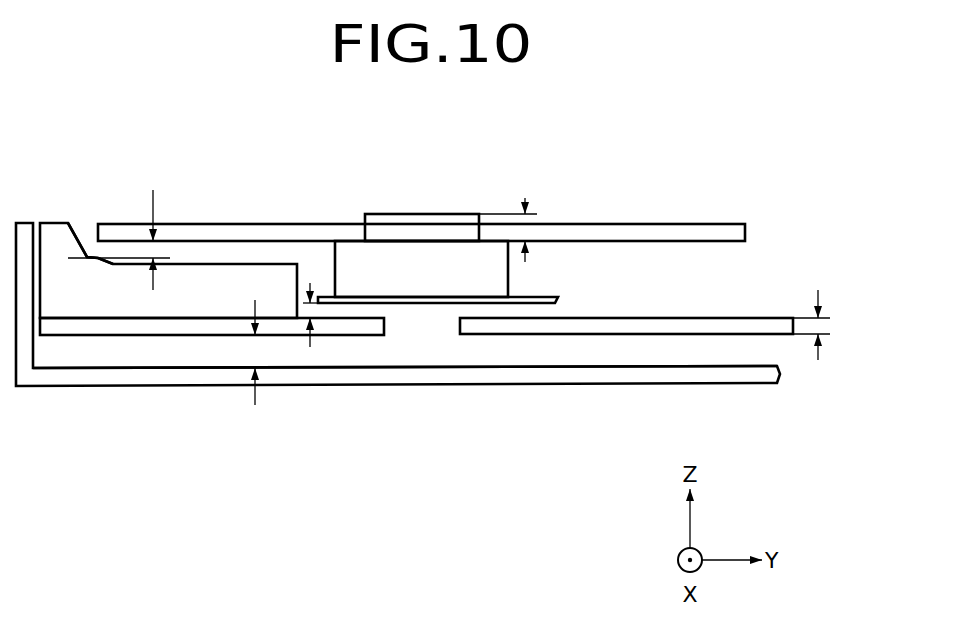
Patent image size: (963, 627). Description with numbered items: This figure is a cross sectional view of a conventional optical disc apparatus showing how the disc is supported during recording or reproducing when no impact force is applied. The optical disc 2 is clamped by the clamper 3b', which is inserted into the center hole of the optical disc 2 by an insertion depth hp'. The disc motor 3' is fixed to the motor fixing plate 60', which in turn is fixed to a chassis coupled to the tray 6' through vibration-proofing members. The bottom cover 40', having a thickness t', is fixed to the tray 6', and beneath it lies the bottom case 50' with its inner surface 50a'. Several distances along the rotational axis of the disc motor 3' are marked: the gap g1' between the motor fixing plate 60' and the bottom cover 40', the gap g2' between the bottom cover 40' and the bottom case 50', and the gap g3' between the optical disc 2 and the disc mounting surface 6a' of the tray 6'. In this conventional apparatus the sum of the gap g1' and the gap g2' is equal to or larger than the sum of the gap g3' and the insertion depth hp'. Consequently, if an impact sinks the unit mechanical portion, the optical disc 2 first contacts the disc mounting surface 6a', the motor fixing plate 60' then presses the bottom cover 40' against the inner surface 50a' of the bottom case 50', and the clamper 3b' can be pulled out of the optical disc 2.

The optical disc 2 is at (650, 223).
The disc motor 3' is at (447, 269).
The clamper 3b' is at (421, 192).
The tray 6' is at (168, 232).
The disc mounting surface 6a' is at (90, 222).
The bottom cover 40' is at (416, 355).
The bottom case 50' is at (398, 333).
The inner surface 50a' is at (405, 351).
The motor fixing plate 60' is at (461, 284).
The gap g1' is at (315, 297).
The gap g2' is at (257, 371).
The gap g3' is at (119, 226).
The insertion depth hp' is at (510, 212).
The thickness t' is at (812, 315).